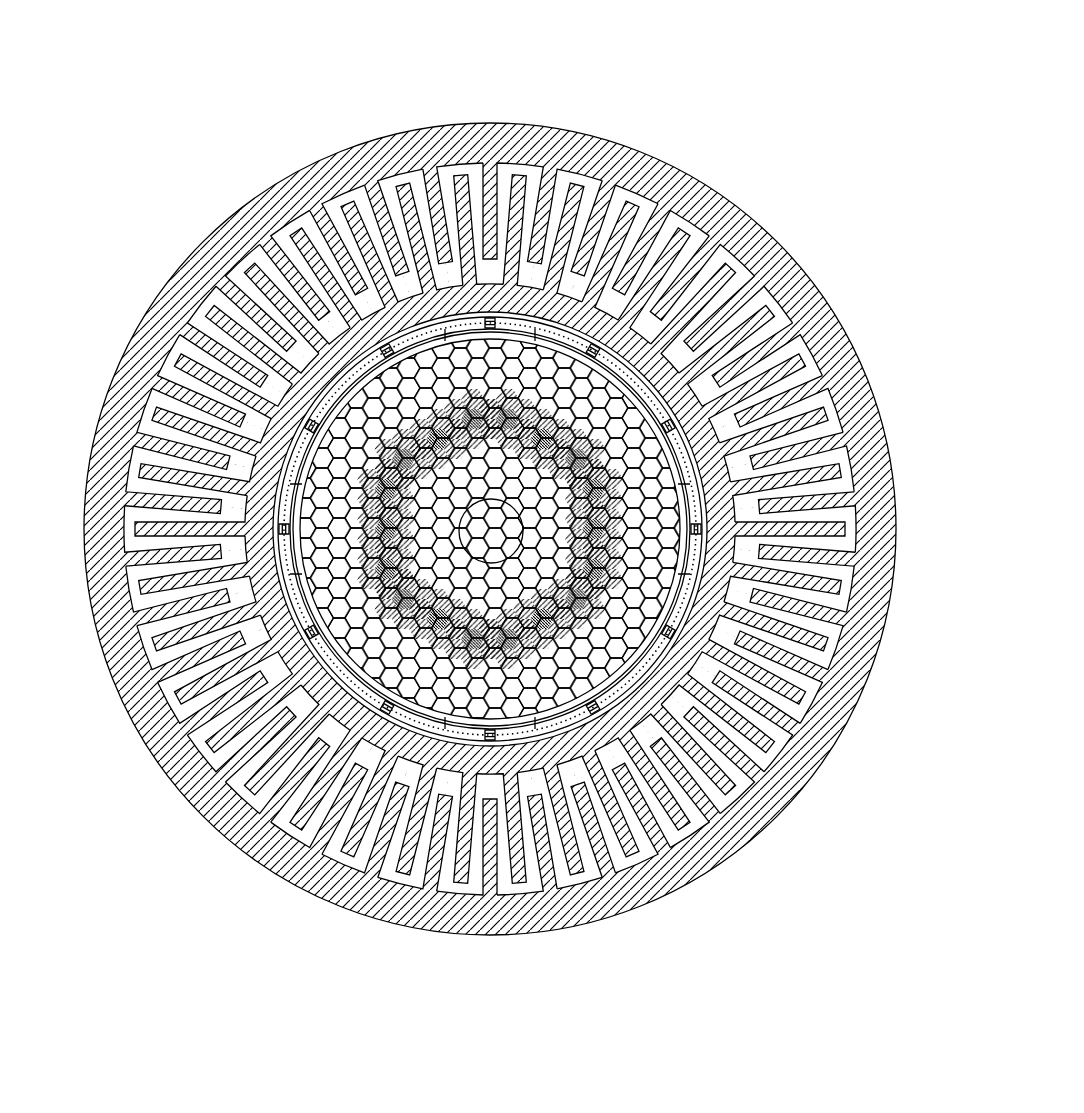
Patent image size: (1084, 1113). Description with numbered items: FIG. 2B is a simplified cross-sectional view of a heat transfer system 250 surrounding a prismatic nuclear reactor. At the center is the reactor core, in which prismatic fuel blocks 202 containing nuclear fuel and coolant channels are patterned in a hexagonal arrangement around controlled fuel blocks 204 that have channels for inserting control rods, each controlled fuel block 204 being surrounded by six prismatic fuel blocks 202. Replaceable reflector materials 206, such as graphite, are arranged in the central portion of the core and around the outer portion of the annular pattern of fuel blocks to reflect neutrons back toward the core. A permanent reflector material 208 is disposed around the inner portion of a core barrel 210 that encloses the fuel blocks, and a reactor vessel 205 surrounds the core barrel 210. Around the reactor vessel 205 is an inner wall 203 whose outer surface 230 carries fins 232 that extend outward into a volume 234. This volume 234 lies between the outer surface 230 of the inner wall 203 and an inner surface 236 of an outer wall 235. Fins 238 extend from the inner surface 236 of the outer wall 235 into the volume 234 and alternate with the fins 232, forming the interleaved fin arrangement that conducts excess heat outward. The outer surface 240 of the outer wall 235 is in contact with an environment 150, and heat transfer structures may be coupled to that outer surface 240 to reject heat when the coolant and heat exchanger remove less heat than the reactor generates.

The environment 150 is at (817, 41).
The prismatic fuel blocks 202 is at (608, 562).
The inner wall 203 is at (515, 507).
The controlled fuel blocks 204 is at (690, 470).
The reactor vessel 205 is at (596, 705).
The replaceable reflector materials 206 is at (543, 372).
The permanent reflector material 208 is at (468, 718).
The core barrel 210 is at (335, 418).
The outer surface of the inner wall 230 is at (668, 705).
The fins 232 is at (727, 281).
The volume 234 is at (690, 230).
The outer wall 235 is at (878, 530).
The inner surface of the outer wall 236 is at (357, 190).
The fins 238 is at (828, 360).
The outer surface of the outer wall 240 is at (891, 600).
The heat transfer system 250 is at (215, 128).